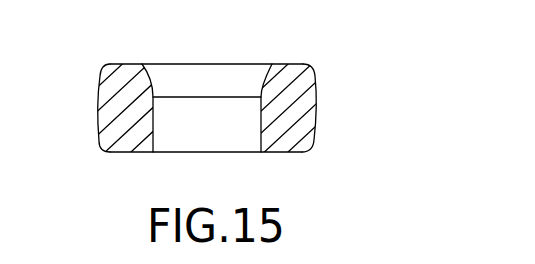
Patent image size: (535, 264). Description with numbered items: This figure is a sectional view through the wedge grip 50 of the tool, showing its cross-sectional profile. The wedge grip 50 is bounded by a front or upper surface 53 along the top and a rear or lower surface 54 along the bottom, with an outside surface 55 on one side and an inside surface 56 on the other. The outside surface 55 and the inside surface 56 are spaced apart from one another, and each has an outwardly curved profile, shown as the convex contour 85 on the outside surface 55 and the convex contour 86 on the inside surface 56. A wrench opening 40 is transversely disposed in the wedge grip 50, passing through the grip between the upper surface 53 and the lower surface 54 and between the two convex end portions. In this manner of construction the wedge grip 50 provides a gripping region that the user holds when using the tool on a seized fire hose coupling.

The wedge grip 50 is at (244, 121).
The wrench opening 40 is at (225, 72).
The front or upper surface 53 is at (165, 63).
The rear or lower surface 54 is at (128, 152).
The outside surface 55 is at (95, 100).
The inside surface 56 is at (316, 92).
The convex contour 85 is at (100, 125).
The convex contour 86 is at (316, 130).